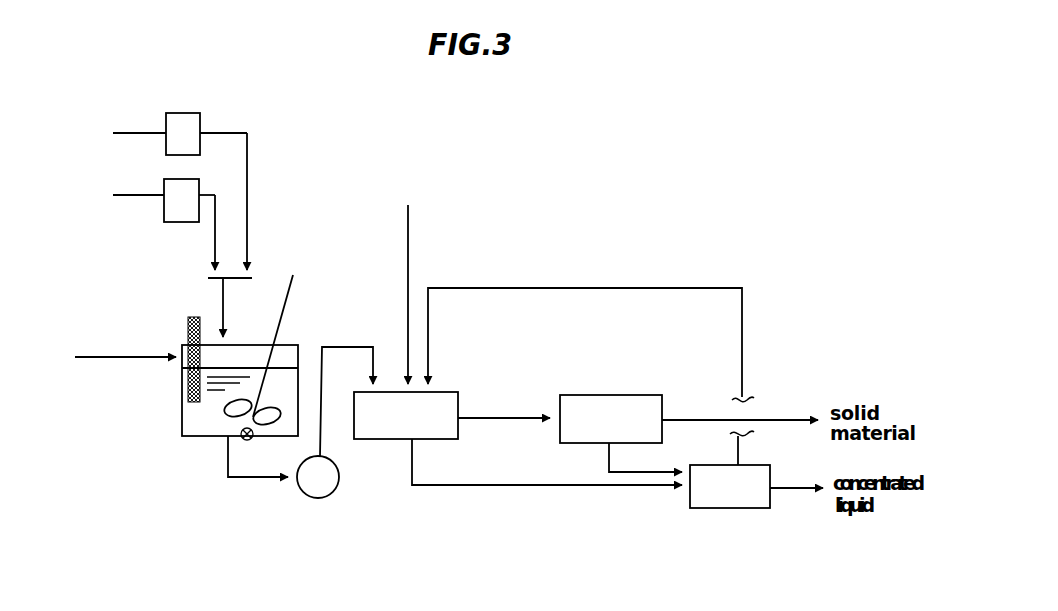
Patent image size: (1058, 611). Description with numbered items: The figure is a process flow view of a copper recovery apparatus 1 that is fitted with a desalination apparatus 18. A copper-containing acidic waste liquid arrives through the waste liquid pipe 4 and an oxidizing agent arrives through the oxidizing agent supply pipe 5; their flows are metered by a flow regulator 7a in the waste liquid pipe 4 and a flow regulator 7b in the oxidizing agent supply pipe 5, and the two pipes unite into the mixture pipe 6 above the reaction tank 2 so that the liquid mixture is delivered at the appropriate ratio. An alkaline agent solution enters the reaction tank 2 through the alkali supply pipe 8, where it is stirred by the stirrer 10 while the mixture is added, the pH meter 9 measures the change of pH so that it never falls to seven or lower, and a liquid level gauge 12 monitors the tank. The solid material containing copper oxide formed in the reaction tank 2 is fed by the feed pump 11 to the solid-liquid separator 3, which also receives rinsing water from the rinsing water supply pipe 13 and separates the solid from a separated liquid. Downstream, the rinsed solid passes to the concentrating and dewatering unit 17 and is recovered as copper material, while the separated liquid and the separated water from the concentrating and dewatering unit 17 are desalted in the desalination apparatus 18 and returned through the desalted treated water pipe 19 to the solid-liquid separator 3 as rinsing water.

The copper recovery apparatus 1 is at (604, 578).
The reaction tank 2 is at (185, 413).
The solid-liquid separator 3 is at (443, 425).
The waste liquid pipe 4 is at (215, 253).
The oxidizing agent supply pipe 5 is at (247, 198).
The mixture pipe 6 is at (223, 300).
The flow regulator 7a is at (197, 187).
The flow regulator 7b is at (201, 122).
The alkali supply pipe 8 is at (120, 355).
The pH meter 9 is at (190, 320).
The stirrer 10 is at (290, 290).
The feed pump 11 is at (333, 472).
The liquid level gauge 12 is at (247, 442).
The rinsing water supply pipe 13 is at (408, 240).
The concentrating and dewatering unit 17 is at (625, 402).
The desalination apparatus 18 is at (740, 498).
The desalted treated water pipe 19 is at (682, 288).